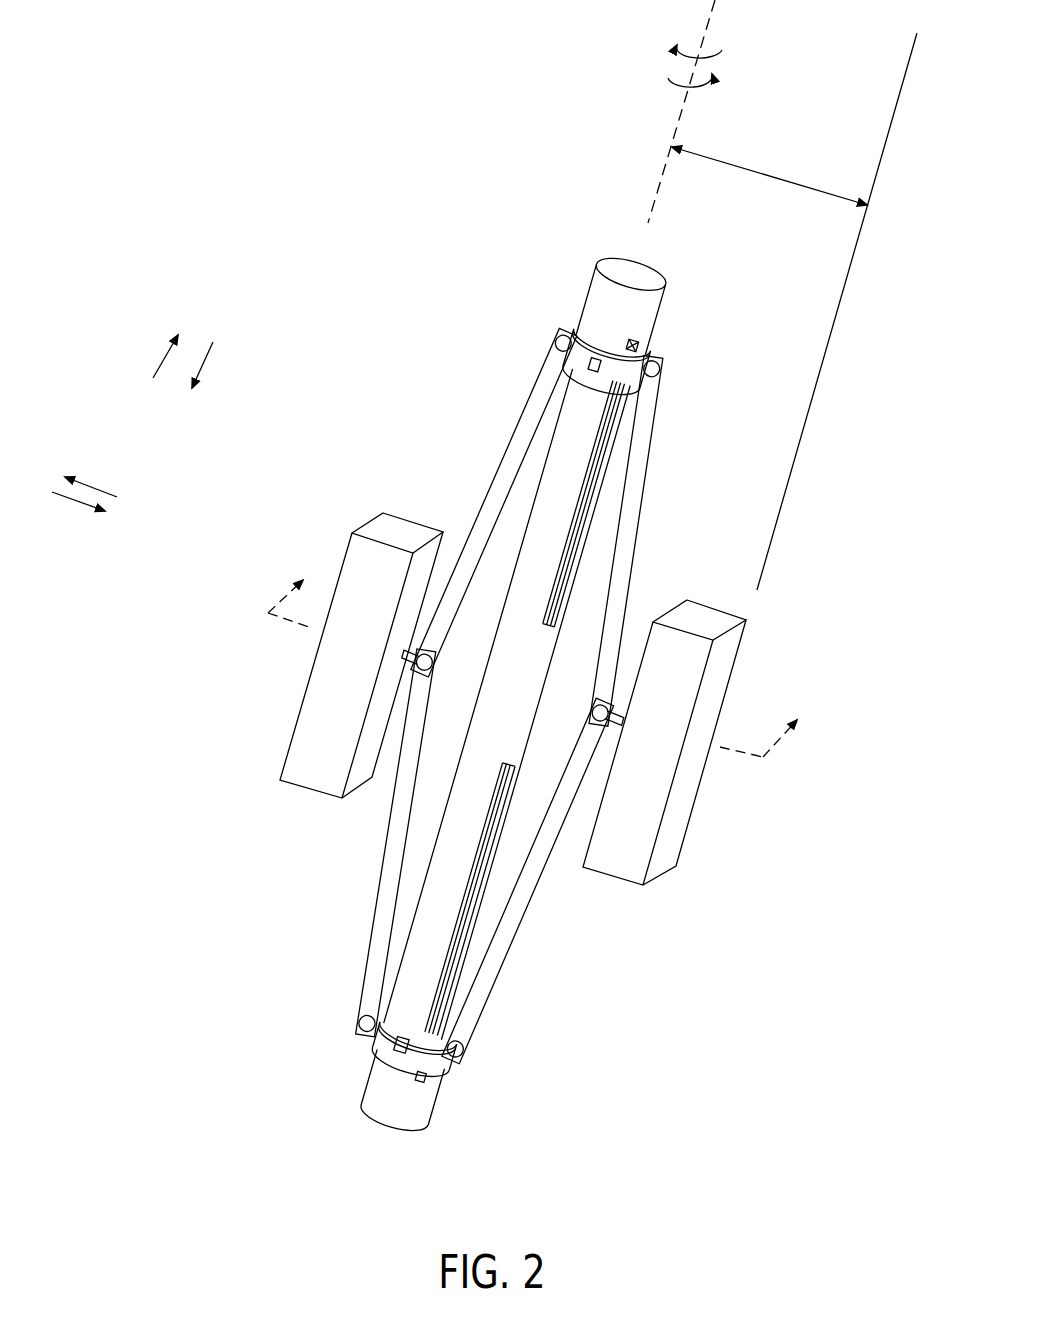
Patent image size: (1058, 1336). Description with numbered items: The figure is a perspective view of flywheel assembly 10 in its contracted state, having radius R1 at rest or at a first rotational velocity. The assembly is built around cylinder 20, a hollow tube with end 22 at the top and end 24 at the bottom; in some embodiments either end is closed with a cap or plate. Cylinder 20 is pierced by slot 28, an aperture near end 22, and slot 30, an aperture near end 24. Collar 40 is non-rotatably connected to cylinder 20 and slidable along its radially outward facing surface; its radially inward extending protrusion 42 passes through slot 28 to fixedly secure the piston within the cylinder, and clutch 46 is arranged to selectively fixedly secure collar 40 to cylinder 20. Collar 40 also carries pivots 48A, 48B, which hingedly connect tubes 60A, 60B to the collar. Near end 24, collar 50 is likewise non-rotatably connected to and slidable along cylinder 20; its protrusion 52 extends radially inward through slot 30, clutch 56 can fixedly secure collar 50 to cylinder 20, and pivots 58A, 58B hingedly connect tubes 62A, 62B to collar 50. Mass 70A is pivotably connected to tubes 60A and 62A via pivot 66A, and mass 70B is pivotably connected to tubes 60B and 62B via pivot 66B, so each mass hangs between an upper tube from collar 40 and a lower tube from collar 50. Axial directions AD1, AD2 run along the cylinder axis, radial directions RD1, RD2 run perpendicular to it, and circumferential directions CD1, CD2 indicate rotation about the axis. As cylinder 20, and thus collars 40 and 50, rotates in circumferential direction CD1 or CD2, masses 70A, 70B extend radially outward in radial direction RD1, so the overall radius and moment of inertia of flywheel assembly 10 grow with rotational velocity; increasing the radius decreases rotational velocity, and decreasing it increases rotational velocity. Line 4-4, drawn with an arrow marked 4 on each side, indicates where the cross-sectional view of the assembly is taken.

The flywheel assembly 10 is at (287, 86).
The cylinder 20 is at (609, 292).
The end 22 is at (643, 272).
The end 24 is at (410, 1130).
The slot 28 is at (600, 465).
The slot 30 is at (472, 912).
The collar 40 is at (628, 376).
The protrusion 42 is at (640, 343).
The clutch 46 is at (597, 360).
The pivot 48A is at (554, 341).
The pivot 48B is at (661, 368).
The collar 50 is at (380, 1040).
The protrusion 52 is at (465, 1040).
The clutch 56 is at (400, 1053).
The pivot 58A is at (359, 1021).
The pivot 58B is at (464, 1056).
The tube 60A is at (505, 457).
The tube 60B is at (640, 519).
The tube 62A is at (387, 871).
The tube 62B is at (500, 956).
The pivot 66A is at (430, 672).
The pivot 66B is at (597, 705).
The mass 70A is at (308, 733).
The mass 70B is at (725, 682).
The line 4- 4 is at (541, 654).
The axial direction AD1 is at (160, 367).
The axial direction AD2 is at (207, 355).
The radial direction RD1 is at (100, 487).
The radial direction RD2 is at (85, 506).
The circumferential direction CD1 is at (672, 48).
The circumferential direction CD2 is at (710, 95).
The radius R1 is at (820, 190).